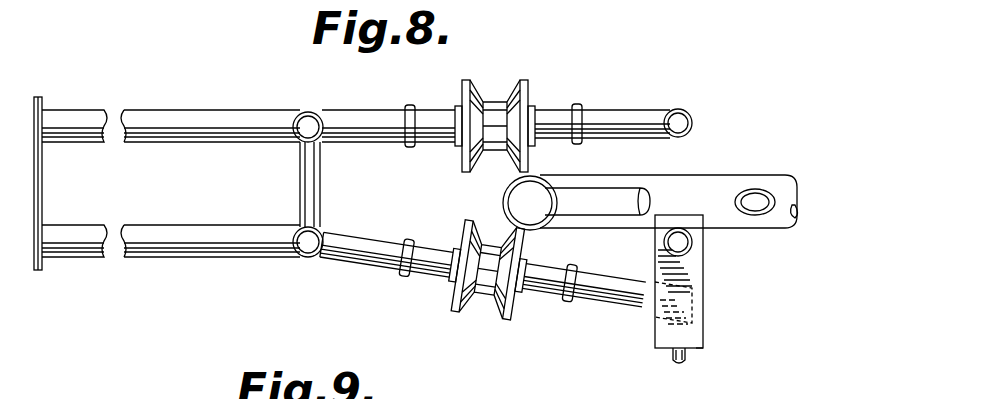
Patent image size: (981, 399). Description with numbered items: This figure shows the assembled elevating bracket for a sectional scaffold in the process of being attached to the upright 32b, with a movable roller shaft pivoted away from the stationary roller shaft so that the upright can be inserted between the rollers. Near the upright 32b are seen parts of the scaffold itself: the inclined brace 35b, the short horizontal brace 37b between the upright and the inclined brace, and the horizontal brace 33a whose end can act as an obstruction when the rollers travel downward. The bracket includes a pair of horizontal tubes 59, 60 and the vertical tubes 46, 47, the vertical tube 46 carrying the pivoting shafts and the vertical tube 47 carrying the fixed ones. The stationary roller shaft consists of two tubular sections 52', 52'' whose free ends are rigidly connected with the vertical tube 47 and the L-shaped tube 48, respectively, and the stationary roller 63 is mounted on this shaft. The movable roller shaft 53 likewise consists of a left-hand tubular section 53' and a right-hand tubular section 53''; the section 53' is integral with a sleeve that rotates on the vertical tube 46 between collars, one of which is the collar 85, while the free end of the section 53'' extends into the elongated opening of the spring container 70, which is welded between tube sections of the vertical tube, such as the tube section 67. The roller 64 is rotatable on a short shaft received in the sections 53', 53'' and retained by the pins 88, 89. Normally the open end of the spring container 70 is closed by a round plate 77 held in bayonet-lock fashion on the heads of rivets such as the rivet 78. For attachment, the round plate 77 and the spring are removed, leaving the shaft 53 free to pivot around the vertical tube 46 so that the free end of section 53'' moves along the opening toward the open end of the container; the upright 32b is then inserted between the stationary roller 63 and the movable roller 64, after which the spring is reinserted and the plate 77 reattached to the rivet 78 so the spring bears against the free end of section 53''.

The horizontal tube 60 is at (105, 112).
The horizontal tube 59 is at (106, 250).
The vertical tube 47 is at (300, 113).
The vertical tube 46 is at (299, 234).
The shaft section 52' is at (392, 111).
The shaft section 52'' is at (599, 109).
The roller 63 is at (522, 98).
The L-shaped tube 48 is at (688, 109).
The upright 32b is at (506, 204).
The inclined brace 35b is at (710, 190).
The short horizontal brace 37b is at (590, 195).
The horizontal brace 33a is at (757, 222).
The spring container 70 is at (720, 337).
The tube section 67 is at (691, 250).
The round plate 77 is at (697, 350).
The rivet 78 is at (680, 364).
The collar 85 is at (324, 228).
The pin 88 is at (412, 224).
The pin 89 is at (576, 224).
The roller shaft 53 is at (520, 303).
The left-hand tubular section 53' is at (390, 254).
The right-hand tubular section 53'' is at (583, 267).
The roller 64 is at (493, 290).